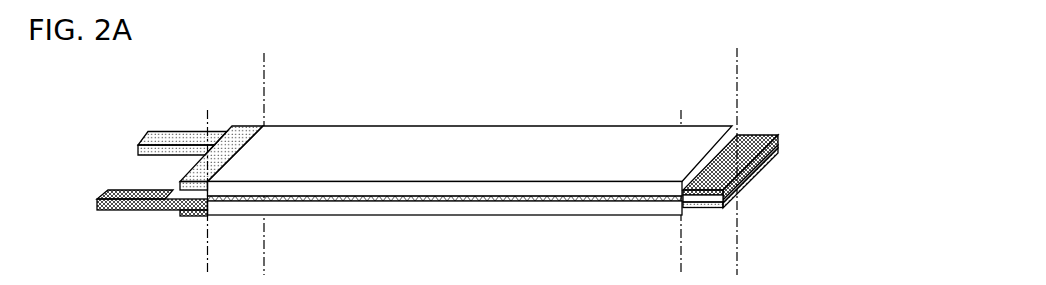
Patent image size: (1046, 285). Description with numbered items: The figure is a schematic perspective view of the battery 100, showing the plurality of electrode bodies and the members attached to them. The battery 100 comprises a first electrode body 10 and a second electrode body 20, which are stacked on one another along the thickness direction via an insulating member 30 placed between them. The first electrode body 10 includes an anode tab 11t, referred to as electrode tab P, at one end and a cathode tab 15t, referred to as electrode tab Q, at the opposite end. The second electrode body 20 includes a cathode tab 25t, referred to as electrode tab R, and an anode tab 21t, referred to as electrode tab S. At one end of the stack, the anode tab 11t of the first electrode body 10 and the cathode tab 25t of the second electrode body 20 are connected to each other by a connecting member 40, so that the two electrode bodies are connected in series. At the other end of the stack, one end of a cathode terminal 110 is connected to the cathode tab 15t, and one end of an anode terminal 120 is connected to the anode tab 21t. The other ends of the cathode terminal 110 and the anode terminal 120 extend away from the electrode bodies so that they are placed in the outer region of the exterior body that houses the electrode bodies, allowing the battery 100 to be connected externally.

The battery 100 is at (665, 47).
The first electrode body 10 is at (422, 140).
The second electrode body 20 is at (425, 207).
The insulating member 30 is at (502, 201).
The connecting member 40 is at (750, 170).
The cathode terminal 110 is at (148, 131).
The anode terminal 120 is at (108, 189).
The cathode tab 15t is at (233, 126).
The anode tab 11t is at (761, 134).
The anode tab 21t is at (192, 217).
The cathode tab 25t is at (710, 208).